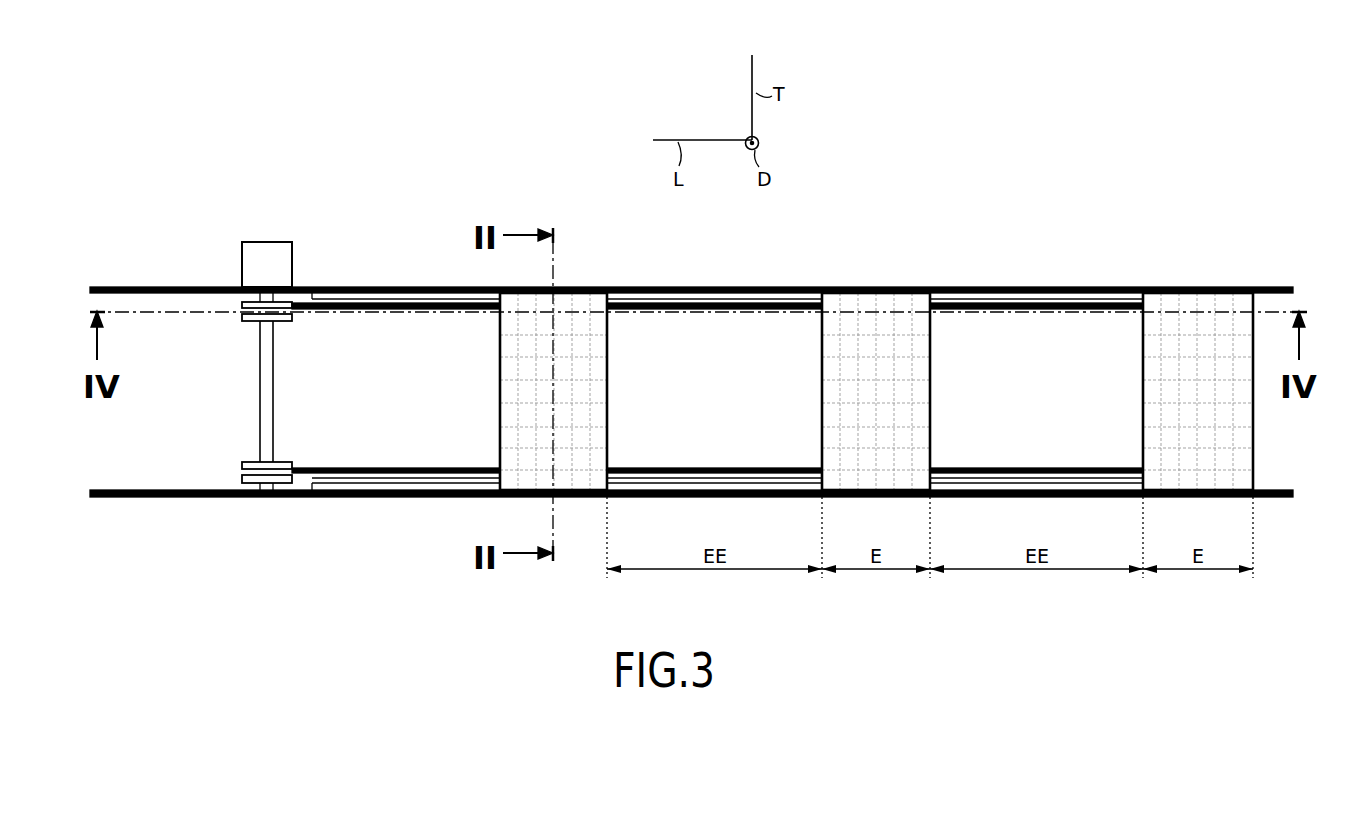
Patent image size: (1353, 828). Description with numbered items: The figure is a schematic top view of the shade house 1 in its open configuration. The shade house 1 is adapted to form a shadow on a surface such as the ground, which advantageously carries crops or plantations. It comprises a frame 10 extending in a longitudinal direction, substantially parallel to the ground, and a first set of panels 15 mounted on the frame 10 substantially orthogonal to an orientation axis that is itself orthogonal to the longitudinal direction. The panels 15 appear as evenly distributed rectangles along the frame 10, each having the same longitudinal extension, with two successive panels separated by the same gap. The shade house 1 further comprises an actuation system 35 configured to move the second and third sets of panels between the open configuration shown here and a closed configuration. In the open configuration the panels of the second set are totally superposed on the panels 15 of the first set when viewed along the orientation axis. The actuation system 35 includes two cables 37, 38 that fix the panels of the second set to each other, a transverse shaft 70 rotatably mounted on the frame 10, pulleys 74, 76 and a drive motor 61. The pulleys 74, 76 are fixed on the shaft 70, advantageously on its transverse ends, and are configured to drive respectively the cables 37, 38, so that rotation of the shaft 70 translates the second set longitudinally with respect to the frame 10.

The shade house 1 is at (993, 150).
The frame 10 is at (1045, 288).
The panels of the first set 15 is at (597, 298).
The actuation system 35 is at (303, 281).
The cable 37 is at (713, 305).
The cable 38 is at (755, 478).
The drive motor 61 is at (271, 257).
The transverse shaft 70 is at (262, 380).
The pulley 74 is at (250, 303).
The pulley 76 is at (248, 480).